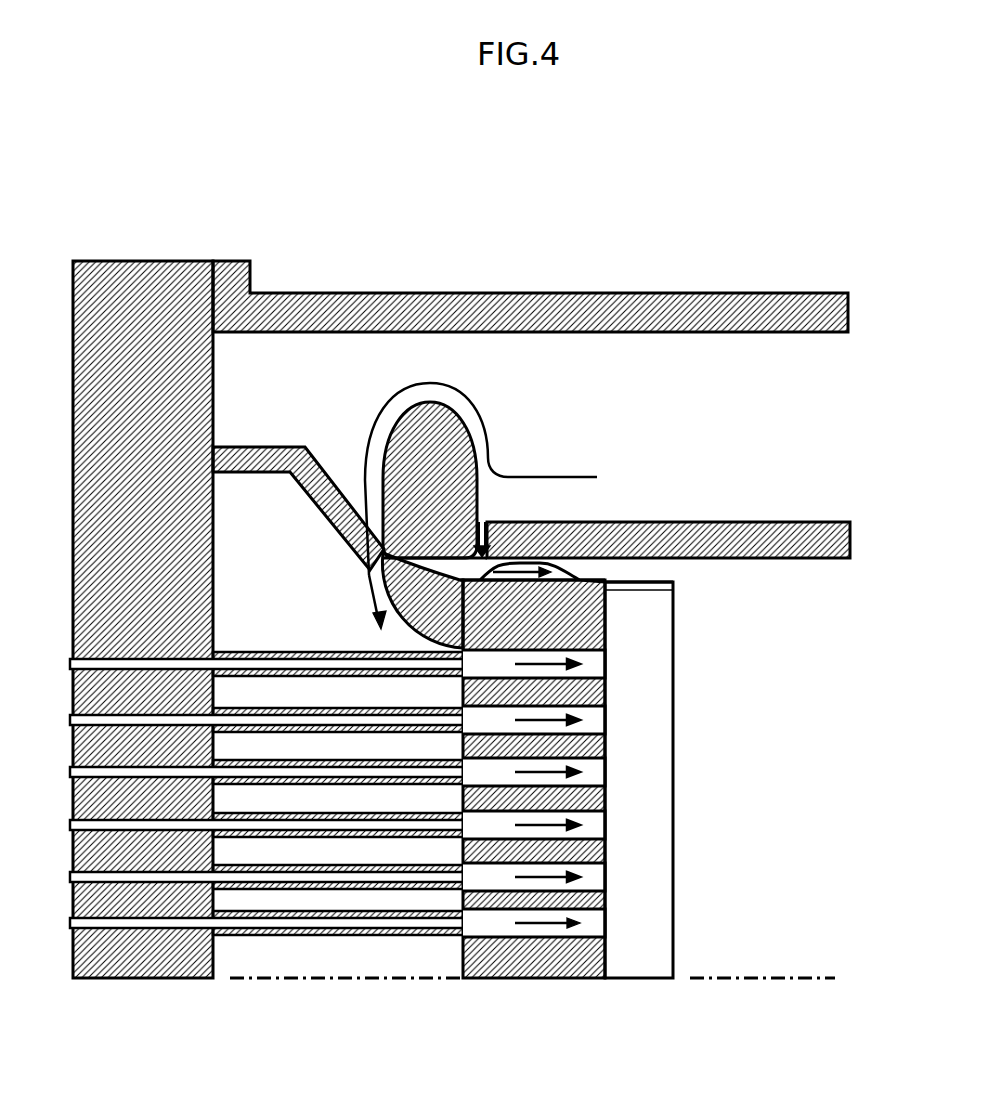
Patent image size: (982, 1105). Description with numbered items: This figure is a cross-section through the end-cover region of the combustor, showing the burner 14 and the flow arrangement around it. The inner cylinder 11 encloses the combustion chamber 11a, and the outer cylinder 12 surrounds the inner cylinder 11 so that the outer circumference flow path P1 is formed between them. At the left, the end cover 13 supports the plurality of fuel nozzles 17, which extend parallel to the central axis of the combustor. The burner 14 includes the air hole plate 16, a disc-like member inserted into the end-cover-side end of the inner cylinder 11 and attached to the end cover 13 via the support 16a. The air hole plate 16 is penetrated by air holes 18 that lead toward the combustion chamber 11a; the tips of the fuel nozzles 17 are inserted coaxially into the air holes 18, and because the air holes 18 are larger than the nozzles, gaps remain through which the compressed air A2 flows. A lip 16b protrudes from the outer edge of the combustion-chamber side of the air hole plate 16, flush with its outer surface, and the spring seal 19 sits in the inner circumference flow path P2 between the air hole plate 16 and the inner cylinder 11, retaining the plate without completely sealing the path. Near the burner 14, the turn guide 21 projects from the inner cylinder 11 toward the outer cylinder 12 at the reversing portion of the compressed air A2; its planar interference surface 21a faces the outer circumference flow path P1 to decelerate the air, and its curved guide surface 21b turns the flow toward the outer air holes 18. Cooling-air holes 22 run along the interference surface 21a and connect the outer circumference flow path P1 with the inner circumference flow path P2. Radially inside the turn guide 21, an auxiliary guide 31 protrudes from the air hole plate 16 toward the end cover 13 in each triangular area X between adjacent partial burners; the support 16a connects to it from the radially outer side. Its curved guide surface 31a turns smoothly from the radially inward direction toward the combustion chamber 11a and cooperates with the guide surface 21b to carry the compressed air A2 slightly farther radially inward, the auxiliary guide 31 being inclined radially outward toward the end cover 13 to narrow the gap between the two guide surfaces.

The inner cylinder 11 is at (668, 522).
The combustion chamber 11a is at (790, 737).
The outer cylinder 12 is at (600, 293).
The end cover 13 is at (150, 261).
The burner 14 is at (716, 804).
The air hole plate 16 is at (587, 809).
The support 16a is at (278, 447).
The lip 16b is at (673, 583).
The fuel nozzle 17 is at (345, 940).
The air hole 18 is at (612, 922).
The spring seal 19 is at (565, 578).
The turn guide 21 is at (430, 392).
The interference surface 21a is at (478, 492).
The guide surface 21b is at (392, 422).
The cooling-air hole 22 is at (487, 513).
The auxiliary guide 31 is at (383, 592).
The guide surface 31a is at (380, 620).
The compressed air A2 is at (571, 479).
The outer circumference flow path P1 is at (762, 425).
The inner circumference flow path P2 is at (648, 581).
The triangular area X is at (460, 625).